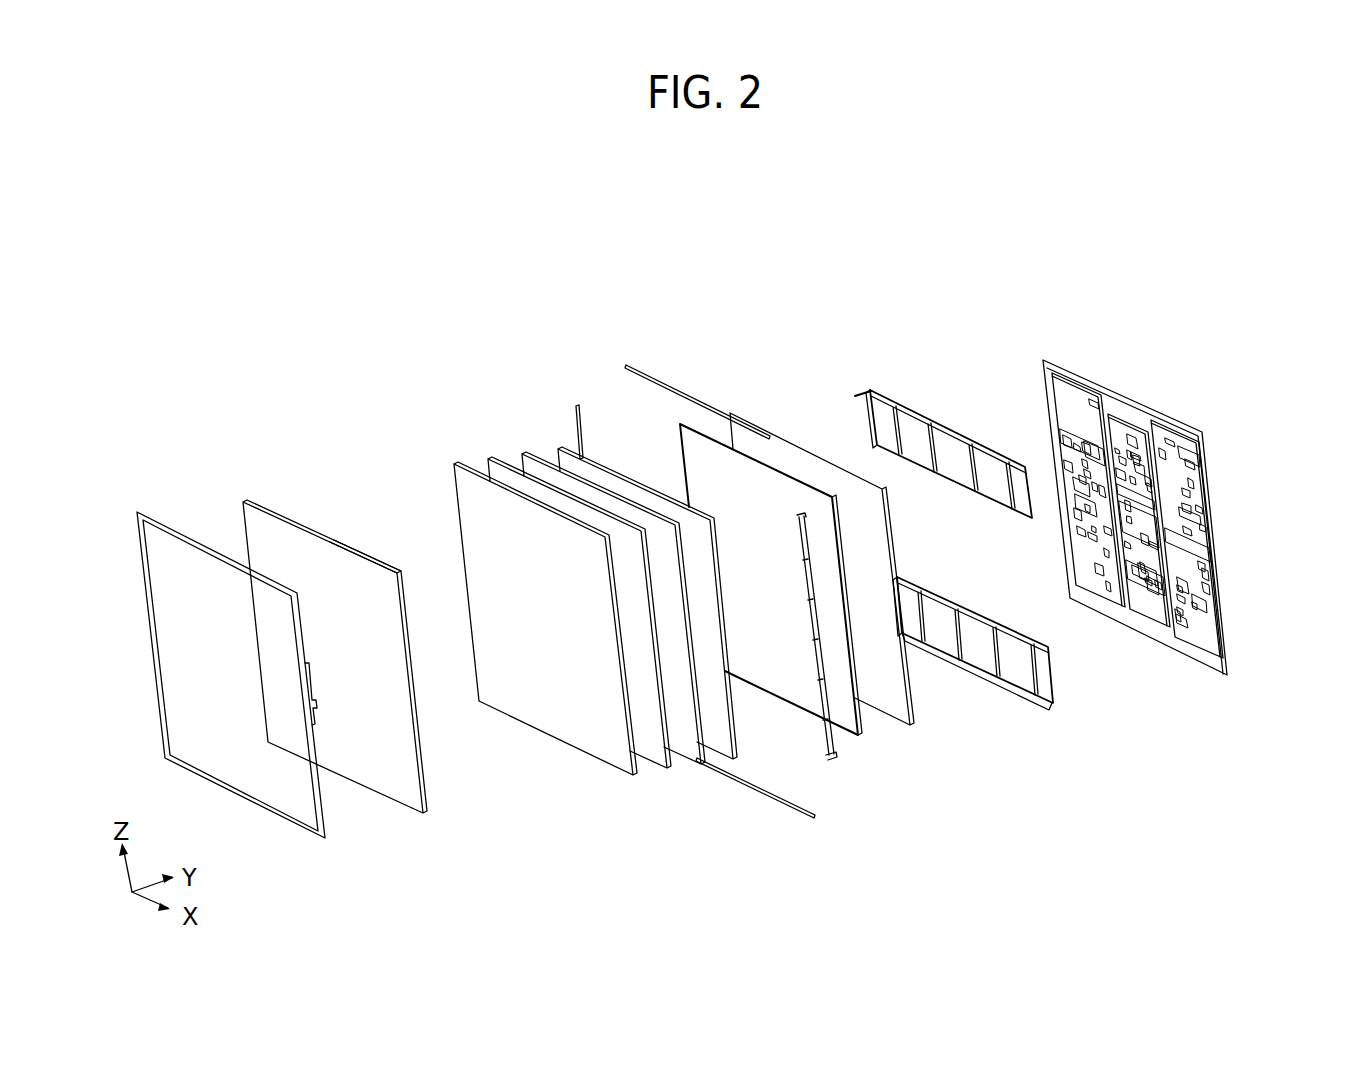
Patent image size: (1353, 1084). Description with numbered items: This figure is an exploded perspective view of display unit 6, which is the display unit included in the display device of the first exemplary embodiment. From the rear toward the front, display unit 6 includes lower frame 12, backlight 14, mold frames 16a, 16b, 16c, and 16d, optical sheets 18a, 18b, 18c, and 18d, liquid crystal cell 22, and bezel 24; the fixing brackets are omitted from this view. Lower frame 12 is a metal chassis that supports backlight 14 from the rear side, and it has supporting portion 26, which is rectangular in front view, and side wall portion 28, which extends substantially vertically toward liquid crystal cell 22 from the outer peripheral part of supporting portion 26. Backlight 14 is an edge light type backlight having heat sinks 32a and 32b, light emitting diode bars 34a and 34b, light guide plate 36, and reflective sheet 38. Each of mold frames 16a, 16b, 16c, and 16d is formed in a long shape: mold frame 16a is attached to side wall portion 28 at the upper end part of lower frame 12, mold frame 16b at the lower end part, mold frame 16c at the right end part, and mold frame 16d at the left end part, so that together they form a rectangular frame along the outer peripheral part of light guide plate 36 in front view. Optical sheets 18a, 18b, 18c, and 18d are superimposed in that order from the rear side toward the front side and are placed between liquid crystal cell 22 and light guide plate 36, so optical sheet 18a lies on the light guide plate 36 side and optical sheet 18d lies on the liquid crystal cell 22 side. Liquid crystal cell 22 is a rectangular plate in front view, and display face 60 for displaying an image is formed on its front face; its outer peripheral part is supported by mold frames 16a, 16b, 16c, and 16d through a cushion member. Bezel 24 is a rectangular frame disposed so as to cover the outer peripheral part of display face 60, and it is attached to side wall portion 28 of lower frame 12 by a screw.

The display unit 6 is at (1002, 235).
The lower frame 12 is at (1175, 418).
The backlight 14 is at (880, 326).
The mold frame 16a is at (680, 388).
The mold frame 16b is at (793, 812).
The mold frame 16c is at (832, 748).
The mold frame 16d is at (577, 402).
The optical sheet 18a is at (578, 459).
The optical sheet 18b is at (555, 470).
The optical sheet 18c is at (520, 473).
The optical sheet 18d is at (468, 470).
The liquid crystal cell 22 is at (273, 540).
The bezel 24 is at (176, 527).
The supporting portion 26 is at (1198, 542).
The side wall portion 28 is at (1082, 392).
The heat sink 32a is at (950, 465).
The heat sink 32b is at (1003, 645).
The LED bar 34a is at (856, 396).
The LED bar 34b is at (973, 680).
The light guide plate 36 is at (688, 468).
The reflective sheet 38 is at (797, 446).
The display face 60 is at (350, 570).